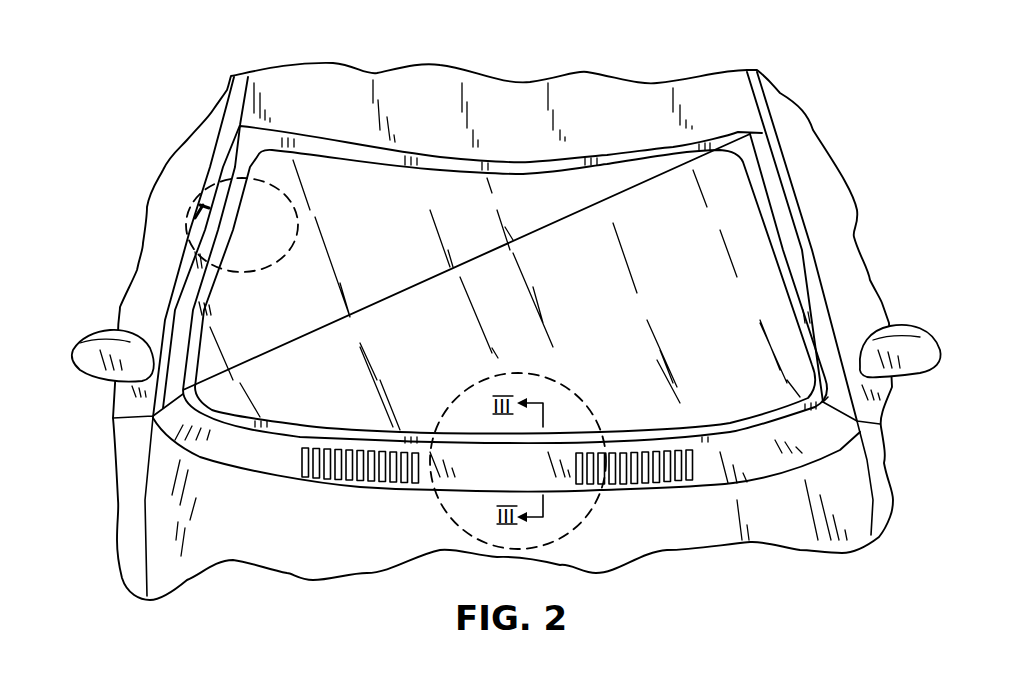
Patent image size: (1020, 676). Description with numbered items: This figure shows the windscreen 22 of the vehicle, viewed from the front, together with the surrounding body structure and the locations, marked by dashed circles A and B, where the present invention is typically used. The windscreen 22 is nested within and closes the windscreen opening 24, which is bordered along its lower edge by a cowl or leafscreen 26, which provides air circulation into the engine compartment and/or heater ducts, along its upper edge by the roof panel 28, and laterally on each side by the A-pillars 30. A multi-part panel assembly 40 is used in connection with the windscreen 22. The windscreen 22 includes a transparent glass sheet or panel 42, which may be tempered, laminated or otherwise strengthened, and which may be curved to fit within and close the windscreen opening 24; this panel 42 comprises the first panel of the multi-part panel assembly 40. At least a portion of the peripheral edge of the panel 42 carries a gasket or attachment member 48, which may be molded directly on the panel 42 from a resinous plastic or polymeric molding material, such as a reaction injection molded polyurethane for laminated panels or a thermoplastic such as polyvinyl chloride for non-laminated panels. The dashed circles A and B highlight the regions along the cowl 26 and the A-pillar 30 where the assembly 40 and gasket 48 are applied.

The windscreen 22 is at (728, 210).
The windscreen opening 24 is at (401, 152).
The cowl or leafscreen 26 is at (523, 483).
The roof panel 28 is at (512, 139).
The A-pillar 30 is at (207, 243).
The multi-part panel assembly 40 is at (221, 285).
The glass sheet or panel 42 is at (513, 316).
The gasket or attachment member 48 is at (611, 157).
The dashed circle A is at (577, 397).
The dashed circle B is at (243, 217).